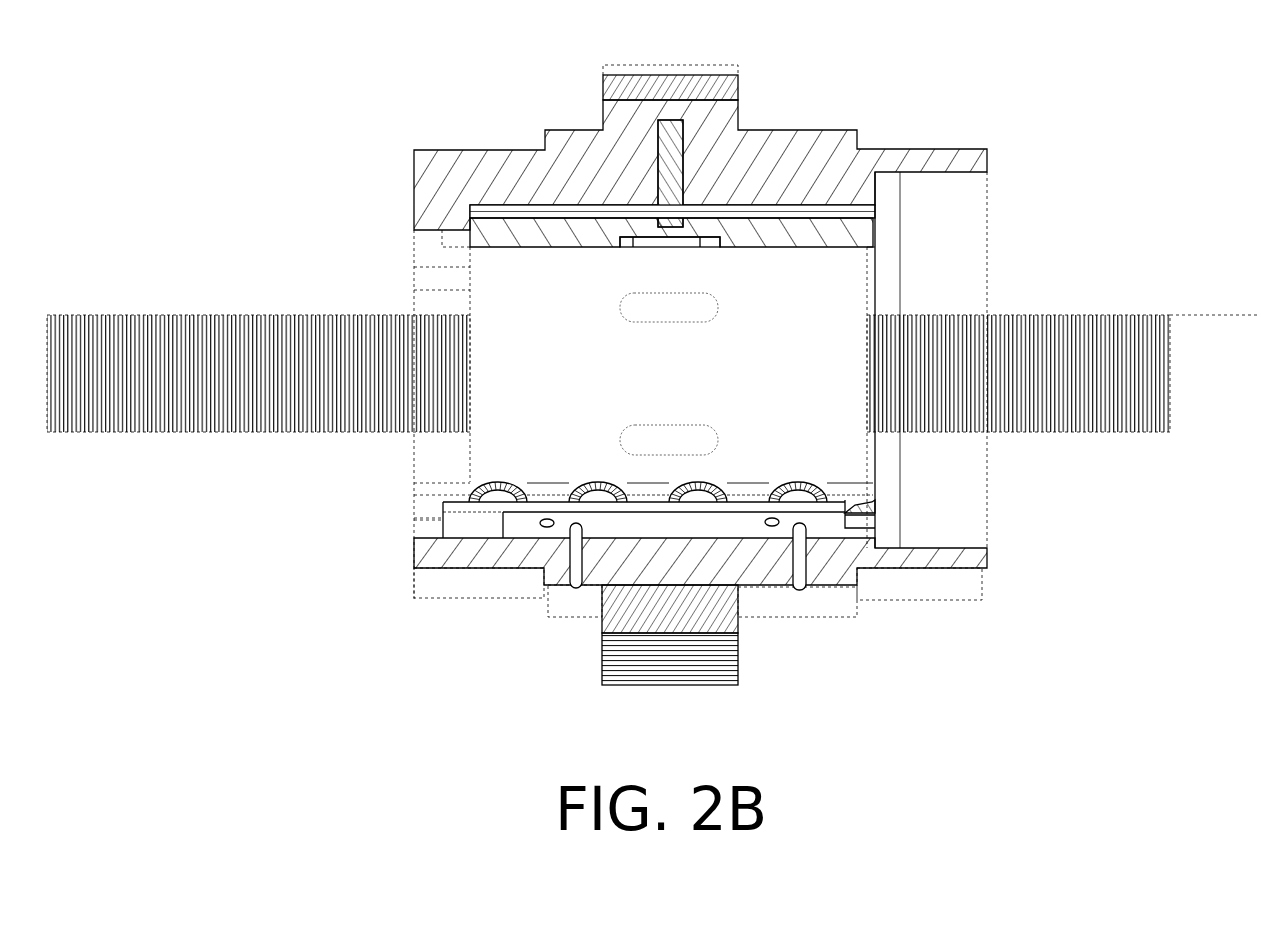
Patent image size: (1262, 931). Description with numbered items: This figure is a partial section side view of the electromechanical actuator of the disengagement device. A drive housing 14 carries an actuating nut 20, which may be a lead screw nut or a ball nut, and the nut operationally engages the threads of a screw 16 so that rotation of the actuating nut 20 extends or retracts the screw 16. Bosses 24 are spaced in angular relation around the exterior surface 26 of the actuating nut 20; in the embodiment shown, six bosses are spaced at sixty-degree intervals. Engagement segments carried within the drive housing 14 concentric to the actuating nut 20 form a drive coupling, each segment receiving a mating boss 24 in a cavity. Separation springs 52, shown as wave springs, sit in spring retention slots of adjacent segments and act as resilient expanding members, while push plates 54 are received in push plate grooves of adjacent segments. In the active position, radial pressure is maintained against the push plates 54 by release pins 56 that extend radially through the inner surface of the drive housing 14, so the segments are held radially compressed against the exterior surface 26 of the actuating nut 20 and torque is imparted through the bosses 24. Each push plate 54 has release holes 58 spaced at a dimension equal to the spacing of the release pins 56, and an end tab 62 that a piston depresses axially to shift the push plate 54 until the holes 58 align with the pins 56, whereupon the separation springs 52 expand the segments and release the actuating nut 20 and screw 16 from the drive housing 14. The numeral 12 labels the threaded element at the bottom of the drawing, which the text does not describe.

The nut 12 is at (720, 687).
The drive housing 14 is at (898, 148).
The screw 16 is at (1230, 353).
The actuating nut 20 is at (512, 278).
The bosses 24 is at (669, 303).
The exterior surface 26 is at (792, 298).
The separation springs 52 is at (500, 483).
The push plates 54 is at (723, 525).
The release pins 56 is at (577, 573).
The release holes 58 is at (547, 530).
The end tab 62 is at (473, 527).